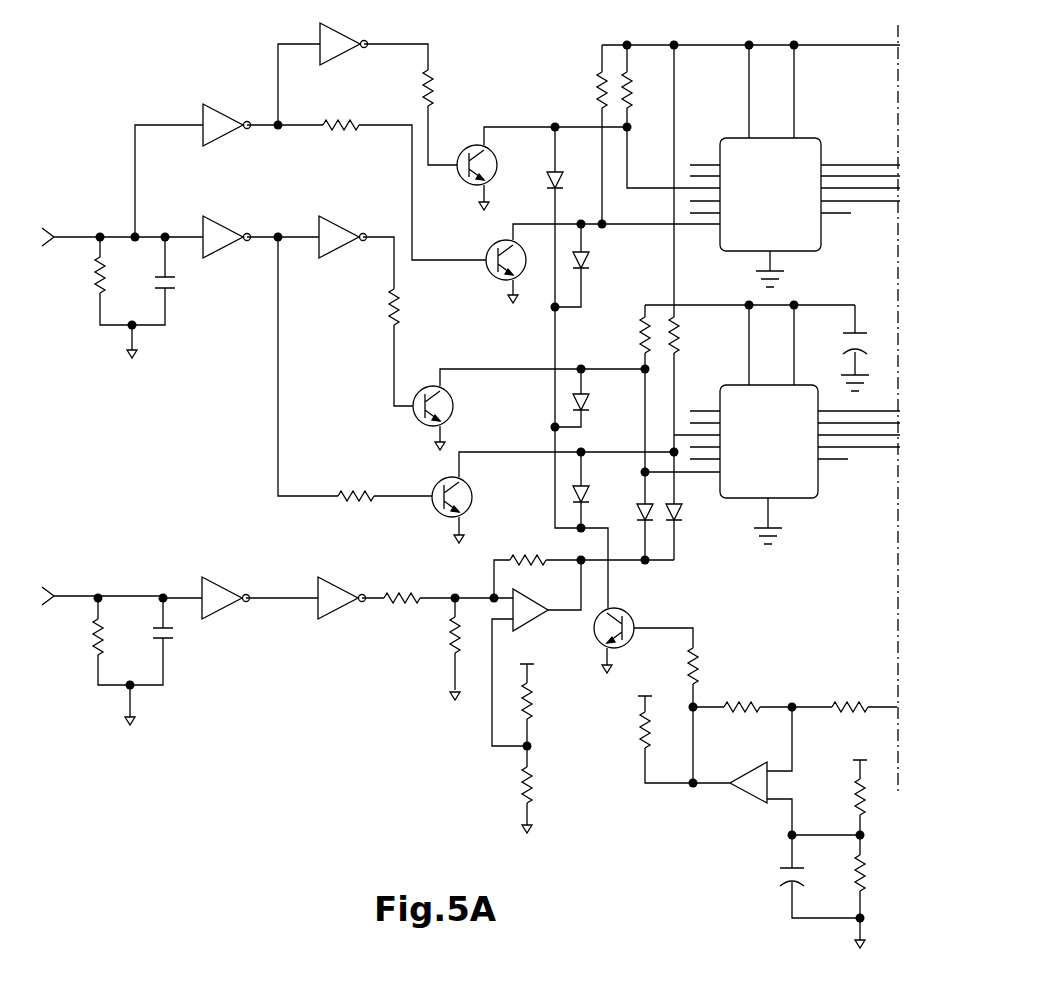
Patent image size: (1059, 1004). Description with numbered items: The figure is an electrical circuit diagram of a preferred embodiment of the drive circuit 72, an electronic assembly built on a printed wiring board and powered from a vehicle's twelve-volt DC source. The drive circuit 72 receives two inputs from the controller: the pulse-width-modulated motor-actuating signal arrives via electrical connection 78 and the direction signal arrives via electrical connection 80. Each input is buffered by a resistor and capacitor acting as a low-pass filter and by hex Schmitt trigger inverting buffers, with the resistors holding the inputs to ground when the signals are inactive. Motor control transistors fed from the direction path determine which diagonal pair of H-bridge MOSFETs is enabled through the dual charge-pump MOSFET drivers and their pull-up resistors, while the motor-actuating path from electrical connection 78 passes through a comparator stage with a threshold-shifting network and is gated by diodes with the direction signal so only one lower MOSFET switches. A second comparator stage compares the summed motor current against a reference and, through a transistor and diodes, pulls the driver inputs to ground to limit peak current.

The drive circuit 72 is at (150, 461).
The electrical connection 78 is at (60, 600).
The electrical connection 80 is at (68, 241).